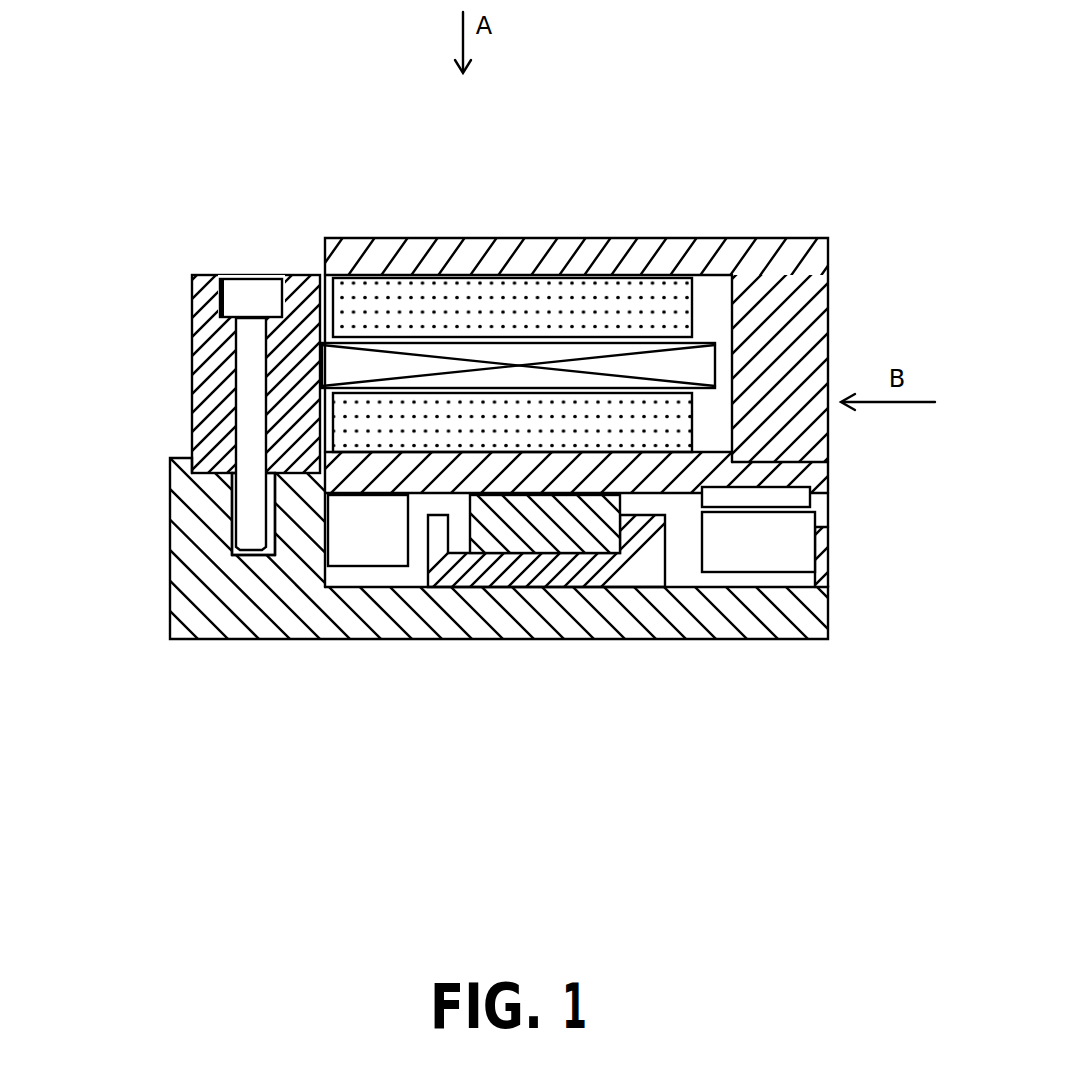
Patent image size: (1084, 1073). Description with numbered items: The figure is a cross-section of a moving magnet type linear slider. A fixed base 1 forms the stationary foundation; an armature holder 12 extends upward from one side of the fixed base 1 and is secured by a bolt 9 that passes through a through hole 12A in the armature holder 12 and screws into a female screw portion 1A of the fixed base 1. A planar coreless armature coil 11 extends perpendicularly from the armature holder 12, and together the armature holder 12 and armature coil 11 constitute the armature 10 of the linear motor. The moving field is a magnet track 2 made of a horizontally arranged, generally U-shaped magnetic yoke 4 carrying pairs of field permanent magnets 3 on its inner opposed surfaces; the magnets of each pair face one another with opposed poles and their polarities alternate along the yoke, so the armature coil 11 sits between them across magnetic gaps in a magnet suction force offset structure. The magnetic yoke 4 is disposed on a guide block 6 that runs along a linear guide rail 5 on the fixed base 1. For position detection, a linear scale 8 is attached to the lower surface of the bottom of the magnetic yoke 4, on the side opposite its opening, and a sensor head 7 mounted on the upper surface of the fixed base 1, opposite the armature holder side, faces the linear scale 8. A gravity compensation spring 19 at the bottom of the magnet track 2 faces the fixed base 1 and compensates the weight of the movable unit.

The fixed base 1 is at (451, 641).
The female screw portion 1A is at (236, 512).
The magnet track 2 is at (653, 330).
The field permanent magnet 3 is at (570, 305).
The magnetic yoke 4 is at (545, 252).
The linear guide rail 5 is at (570, 567).
The guide block 6 is at (580, 522).
The sensor head 7 is at (797, 560).
The linear scale 8 is at (803, 503).
The bolt 9 is at (246, 305).
The armature 10 is at (357, 335).
The armature coil 11 is at (423, 370).
The armature holder 12 is at (261, 359).
The through hole 12A is at (238, 388).
The gravity compensation spring 19 is at (383, 550).